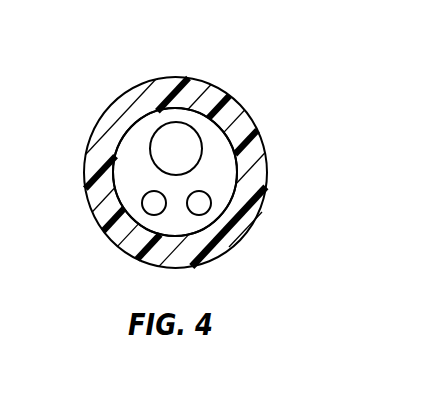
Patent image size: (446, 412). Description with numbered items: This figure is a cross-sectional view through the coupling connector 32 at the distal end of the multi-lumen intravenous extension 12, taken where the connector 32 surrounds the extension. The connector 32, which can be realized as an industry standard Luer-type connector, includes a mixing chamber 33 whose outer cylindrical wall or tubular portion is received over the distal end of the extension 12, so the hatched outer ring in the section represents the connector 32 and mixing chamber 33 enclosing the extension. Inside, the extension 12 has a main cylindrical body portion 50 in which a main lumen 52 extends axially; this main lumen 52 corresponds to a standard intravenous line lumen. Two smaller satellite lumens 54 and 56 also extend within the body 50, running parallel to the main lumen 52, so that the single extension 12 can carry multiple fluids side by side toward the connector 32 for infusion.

The multi-lumen intravenous extension 12 is at (218, 147).
The coupling connector 32 is at (135, 84).
The mixing chamber 33 is at (120, 176).
The main cylindrical body portion 50 is at (215, 182).
The main lumen 52 is at (187, 130).
The satellite lumen 54 is at (202, 207).
The satellite lumen 56 is at (152, 205).